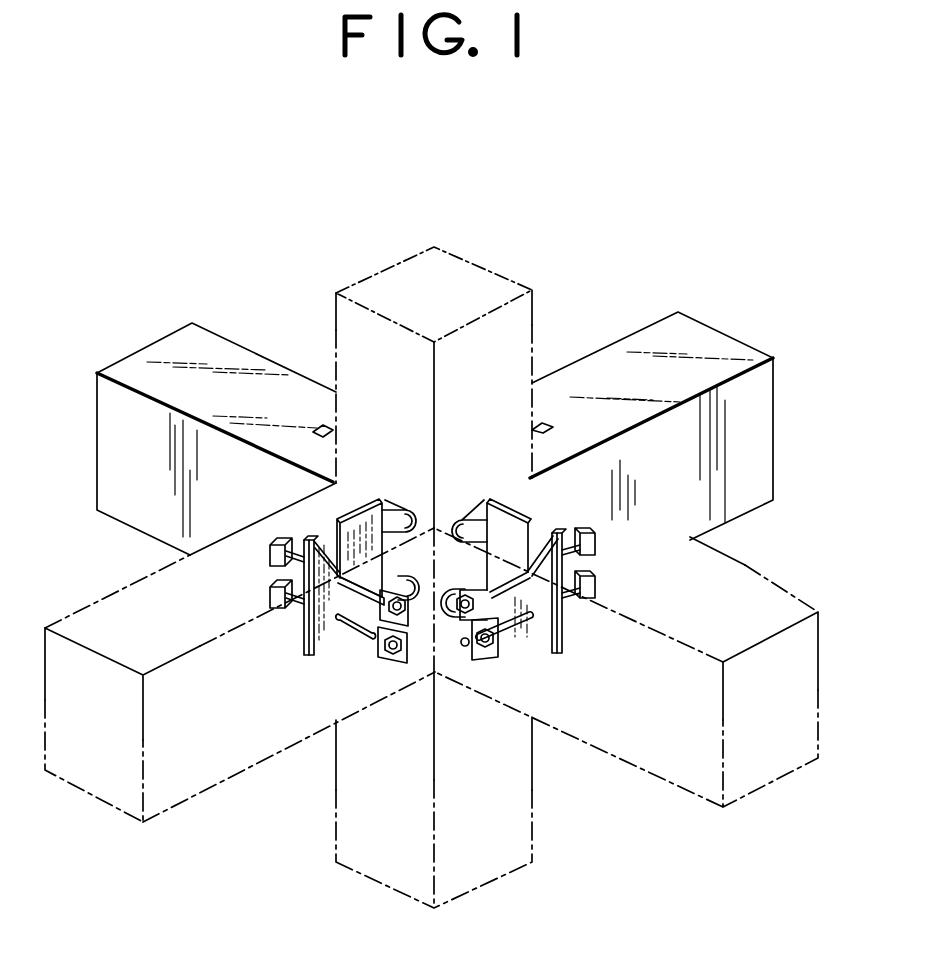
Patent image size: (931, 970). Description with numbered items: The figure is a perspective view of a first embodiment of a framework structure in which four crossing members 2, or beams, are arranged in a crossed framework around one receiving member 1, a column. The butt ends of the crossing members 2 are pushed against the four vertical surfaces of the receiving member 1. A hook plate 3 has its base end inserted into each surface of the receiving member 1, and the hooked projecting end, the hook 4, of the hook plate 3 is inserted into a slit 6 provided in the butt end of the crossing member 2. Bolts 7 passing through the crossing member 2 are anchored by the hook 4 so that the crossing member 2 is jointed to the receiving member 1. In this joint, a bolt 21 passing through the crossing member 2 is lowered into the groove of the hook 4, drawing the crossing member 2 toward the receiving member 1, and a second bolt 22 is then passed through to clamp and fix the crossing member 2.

The receiving member 1 is at (462, 259).
The crossing member 2 is at (157, 352).
The hook plate 3 is at (307, 656).
The hook 4 is at (337, 578).
The slit 6 is at (550, 423).
The bolt 7 is at (360, 600).
The bolt 21 is at (573, 533).
The second bolt 22 is at (579, 594).